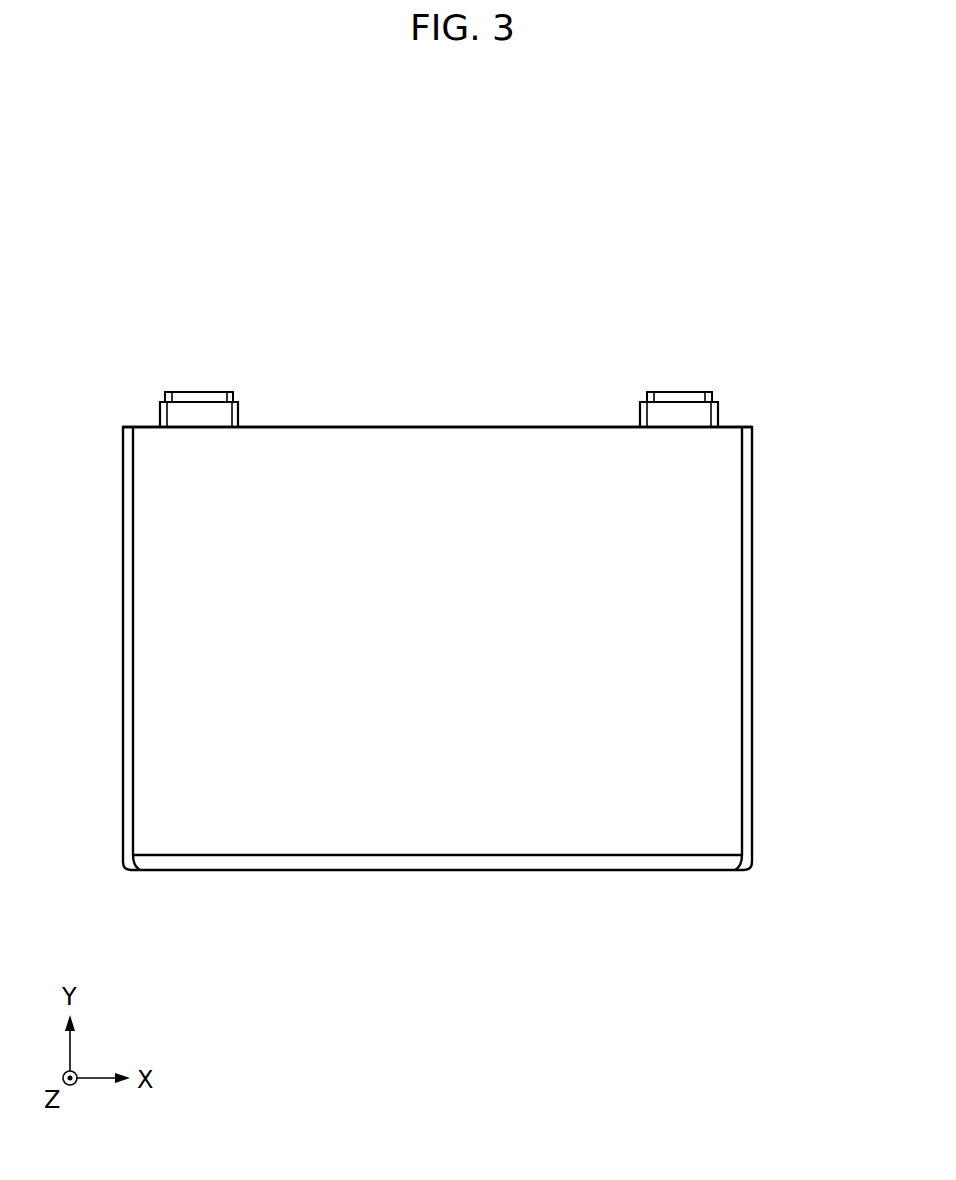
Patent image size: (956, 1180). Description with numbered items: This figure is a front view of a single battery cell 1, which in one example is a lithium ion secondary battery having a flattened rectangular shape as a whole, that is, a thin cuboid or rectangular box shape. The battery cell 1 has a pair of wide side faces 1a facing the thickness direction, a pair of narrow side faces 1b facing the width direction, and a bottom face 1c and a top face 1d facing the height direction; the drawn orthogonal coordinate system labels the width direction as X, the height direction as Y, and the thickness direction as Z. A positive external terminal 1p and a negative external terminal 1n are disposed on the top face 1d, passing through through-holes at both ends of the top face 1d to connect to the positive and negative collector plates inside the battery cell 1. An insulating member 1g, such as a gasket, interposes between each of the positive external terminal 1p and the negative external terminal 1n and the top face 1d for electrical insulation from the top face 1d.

The battery cell 1 is at (441, 575).
The wide side face 1a is at (438, 483).
The narrow side face 1b is at (123, 624).
The bottom face 1c is at (458, 871).
The top face 1d is at (520, 428).
The positive external terminal 1p is at (201, 392).
The negative external terminal 1n is at (687, 392).
The insulating member 1g is at (240, 413).